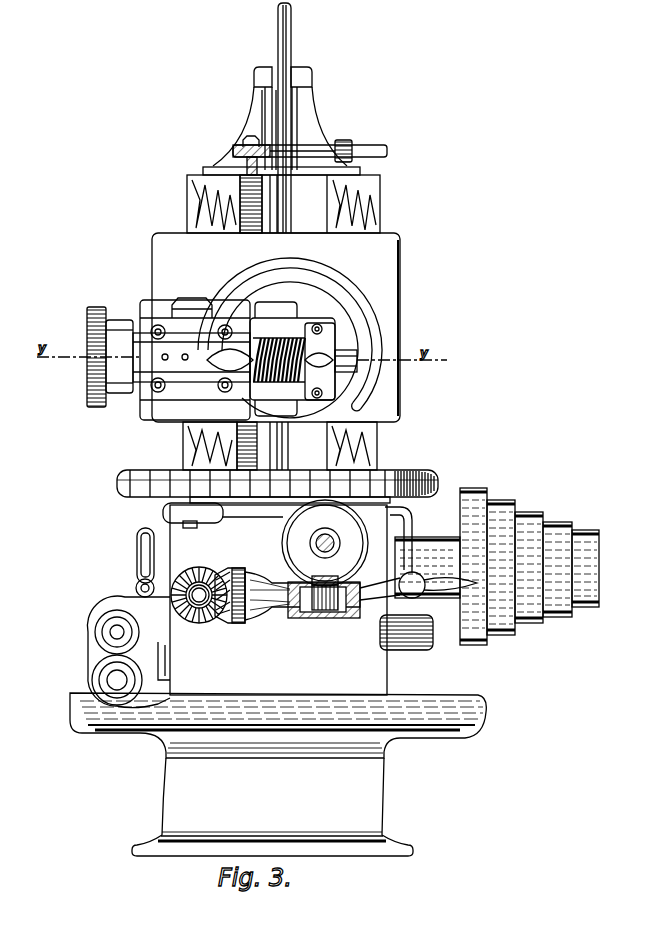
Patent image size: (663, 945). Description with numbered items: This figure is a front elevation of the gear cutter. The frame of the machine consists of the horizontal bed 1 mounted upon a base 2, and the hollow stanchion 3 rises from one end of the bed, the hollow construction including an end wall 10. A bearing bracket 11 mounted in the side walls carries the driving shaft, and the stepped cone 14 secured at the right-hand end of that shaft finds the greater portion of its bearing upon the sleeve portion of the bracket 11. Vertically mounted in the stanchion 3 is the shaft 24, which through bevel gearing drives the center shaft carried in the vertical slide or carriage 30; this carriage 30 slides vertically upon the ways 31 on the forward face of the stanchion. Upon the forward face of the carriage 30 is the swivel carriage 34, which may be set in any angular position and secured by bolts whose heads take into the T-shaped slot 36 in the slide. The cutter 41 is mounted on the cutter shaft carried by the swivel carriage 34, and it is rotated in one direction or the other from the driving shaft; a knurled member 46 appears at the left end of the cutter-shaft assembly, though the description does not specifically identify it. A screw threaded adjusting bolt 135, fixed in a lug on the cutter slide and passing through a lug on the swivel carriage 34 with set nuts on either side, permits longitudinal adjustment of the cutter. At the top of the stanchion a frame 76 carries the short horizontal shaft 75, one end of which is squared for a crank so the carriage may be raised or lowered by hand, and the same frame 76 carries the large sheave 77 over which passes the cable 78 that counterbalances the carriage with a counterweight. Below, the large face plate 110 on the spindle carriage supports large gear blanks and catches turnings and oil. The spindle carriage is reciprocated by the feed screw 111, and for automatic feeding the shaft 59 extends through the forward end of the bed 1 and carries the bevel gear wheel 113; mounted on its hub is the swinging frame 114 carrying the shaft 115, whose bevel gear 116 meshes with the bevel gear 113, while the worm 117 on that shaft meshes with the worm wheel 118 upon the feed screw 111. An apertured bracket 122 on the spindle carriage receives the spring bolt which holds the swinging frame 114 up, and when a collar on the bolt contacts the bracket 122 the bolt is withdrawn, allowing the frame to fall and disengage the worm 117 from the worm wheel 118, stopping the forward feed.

The bed 1 is at (383, 682).
The base 2 is at (272, 807).
The stanchion 3 is at (380, 218).
The end wall 10 is at (298, 599).
The bearing bracket 11 is at (432, 538).
The cone 14 is at (535, 624).
The shaft 24 is at (292, 199).
The vertical slide or carriage 30 is at (276, 327).
The ways 31 is at (186, 442).
The swivel carriage 34 is at (290, 350).
The T-shaped slot 36 is at (355, 316).
The cutter 41 is at (258, 388).
The knob 46 is at (87, 333).
The shaft 59 is at (203, 588).
The short horizontal shaft 75 is at (352, 145).
The frame 76 is at (300, 107).
The large sheave 77 is at (291, 33).
The cable 78 is at (293, 121).
The face plate 110 is at (425, 471).
The feed screw 111 is at (338, 541).
The bevel gear wheel 113 is at (203, 618).
The swinging frame 114 is at (264, 583).
The shaft 115 is at (292, 613).
The bevel gear 116 is at (228, 623).
The worm 117 is at (318, 612).
The worm wheel 118 is at (331, 580).
The apertured bracket 122 is at (404, 517).
The screw threaded adjusting bolt 135 is at (192, 298).